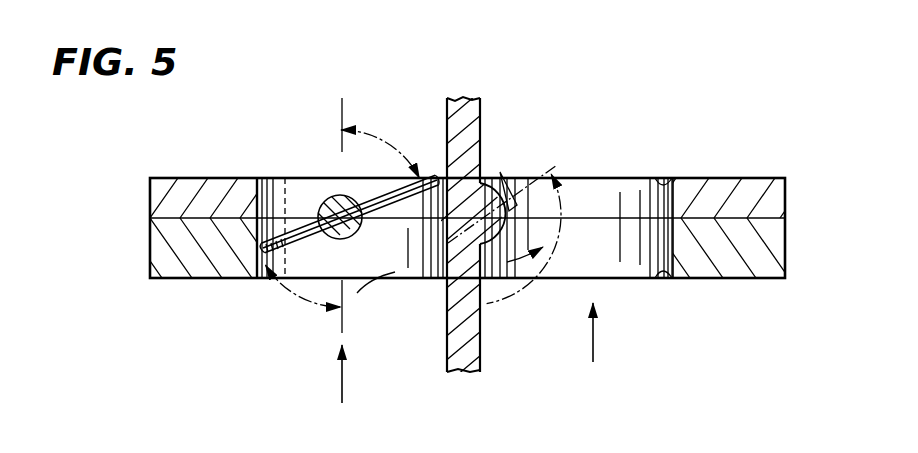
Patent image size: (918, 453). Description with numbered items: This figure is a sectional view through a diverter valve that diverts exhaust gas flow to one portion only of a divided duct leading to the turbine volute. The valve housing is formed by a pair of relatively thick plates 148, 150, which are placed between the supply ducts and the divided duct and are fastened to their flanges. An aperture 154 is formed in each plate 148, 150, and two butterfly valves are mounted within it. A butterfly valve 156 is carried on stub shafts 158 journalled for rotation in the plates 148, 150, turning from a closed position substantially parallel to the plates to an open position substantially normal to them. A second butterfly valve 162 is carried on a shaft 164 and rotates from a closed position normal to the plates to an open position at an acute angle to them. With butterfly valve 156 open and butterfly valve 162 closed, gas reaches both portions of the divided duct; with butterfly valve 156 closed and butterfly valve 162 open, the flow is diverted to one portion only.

The plate 148 is at (763, 178).
The plate 150 is at (757, 280).
The aperture 154 is at (662, 180).
The butterfly valve 156 is at (353, 197).
The stub shaft 158 is at (318, 212).
The second butterfly valve 162 is at (438, 280).
The shaft 164 is at (483, 178).